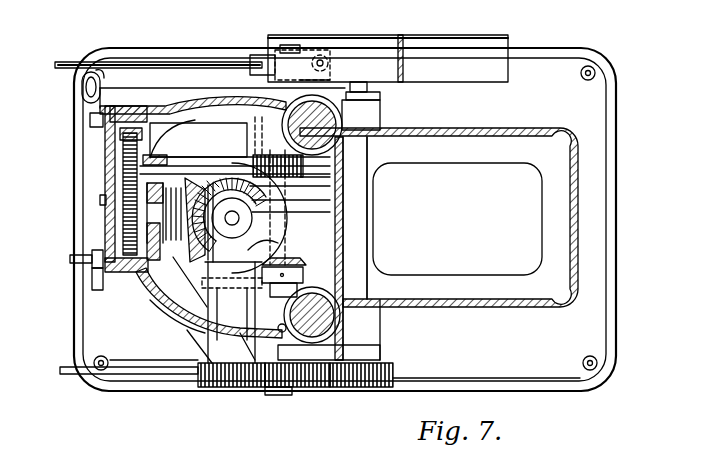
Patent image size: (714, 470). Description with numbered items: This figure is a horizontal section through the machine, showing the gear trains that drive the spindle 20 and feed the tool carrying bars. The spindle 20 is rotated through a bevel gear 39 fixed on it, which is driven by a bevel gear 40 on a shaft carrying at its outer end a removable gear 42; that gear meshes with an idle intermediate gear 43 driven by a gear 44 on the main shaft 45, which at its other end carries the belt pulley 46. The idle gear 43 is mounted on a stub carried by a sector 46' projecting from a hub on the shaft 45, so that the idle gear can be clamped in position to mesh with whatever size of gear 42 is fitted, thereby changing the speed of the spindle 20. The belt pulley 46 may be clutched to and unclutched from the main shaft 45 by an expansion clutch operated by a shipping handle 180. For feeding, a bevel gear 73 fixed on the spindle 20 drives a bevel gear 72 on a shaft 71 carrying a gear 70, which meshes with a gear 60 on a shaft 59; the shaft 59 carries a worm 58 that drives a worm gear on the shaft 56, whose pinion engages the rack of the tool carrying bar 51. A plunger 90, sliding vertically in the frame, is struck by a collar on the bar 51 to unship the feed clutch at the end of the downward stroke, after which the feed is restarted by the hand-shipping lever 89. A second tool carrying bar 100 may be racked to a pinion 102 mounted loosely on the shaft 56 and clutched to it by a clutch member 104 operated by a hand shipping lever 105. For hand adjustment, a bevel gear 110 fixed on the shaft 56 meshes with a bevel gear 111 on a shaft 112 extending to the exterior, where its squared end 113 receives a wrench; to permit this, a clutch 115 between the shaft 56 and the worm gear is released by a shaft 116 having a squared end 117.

The hand shipping lever 105 is at (63, 62).
The clutch member 104 is at (258, 70).
The belt pulley 46 is at (388, 43).
The shipping handle 180 is at (82, 96).
The gear 60 is at (124, 147).
The shaft 59 is at (193, 127).
The bevel gear 73 is at (224, 180).
The pinion 102 is at (254, 125).
The worm 58 is at (266, 148).
The second tool carrying bar 100 is at (310, 118).
The shaft 116 is at (170, 198).
The squared end 117 is at (100, 199).
The gear 70 is at (124, 241).
The squared end 113 is at (75, 262).
The shaft 71 is at (175, 230).
The bevel gear 72 is at (198, 235).
The bevel gear 40 is at (215, 285).
The shaft 112 is at (175, 303).
The bevel gear 39 is at (185, 322).
The spindle 20 is at (252, 218).
The bevel gear 111 is at (280, 244).
The bevel gear 110 is at (285, 262).
The plunger 90 is at (282, 289).
The main shaft 45 is at (355, 193).
The clutch 115 is at (344, 211).
The shaft 56 is at (283, 258).
The tool carrying bar 51 is at (332, 323).
The sector 46' is at (344, 330).
The gear 44 is at (396, 368).
The gear 42 is at (232, 389).
The idle intermediate gear 43 is at (310, 389).
The hand-shipping lever 89 is at (68, 375).